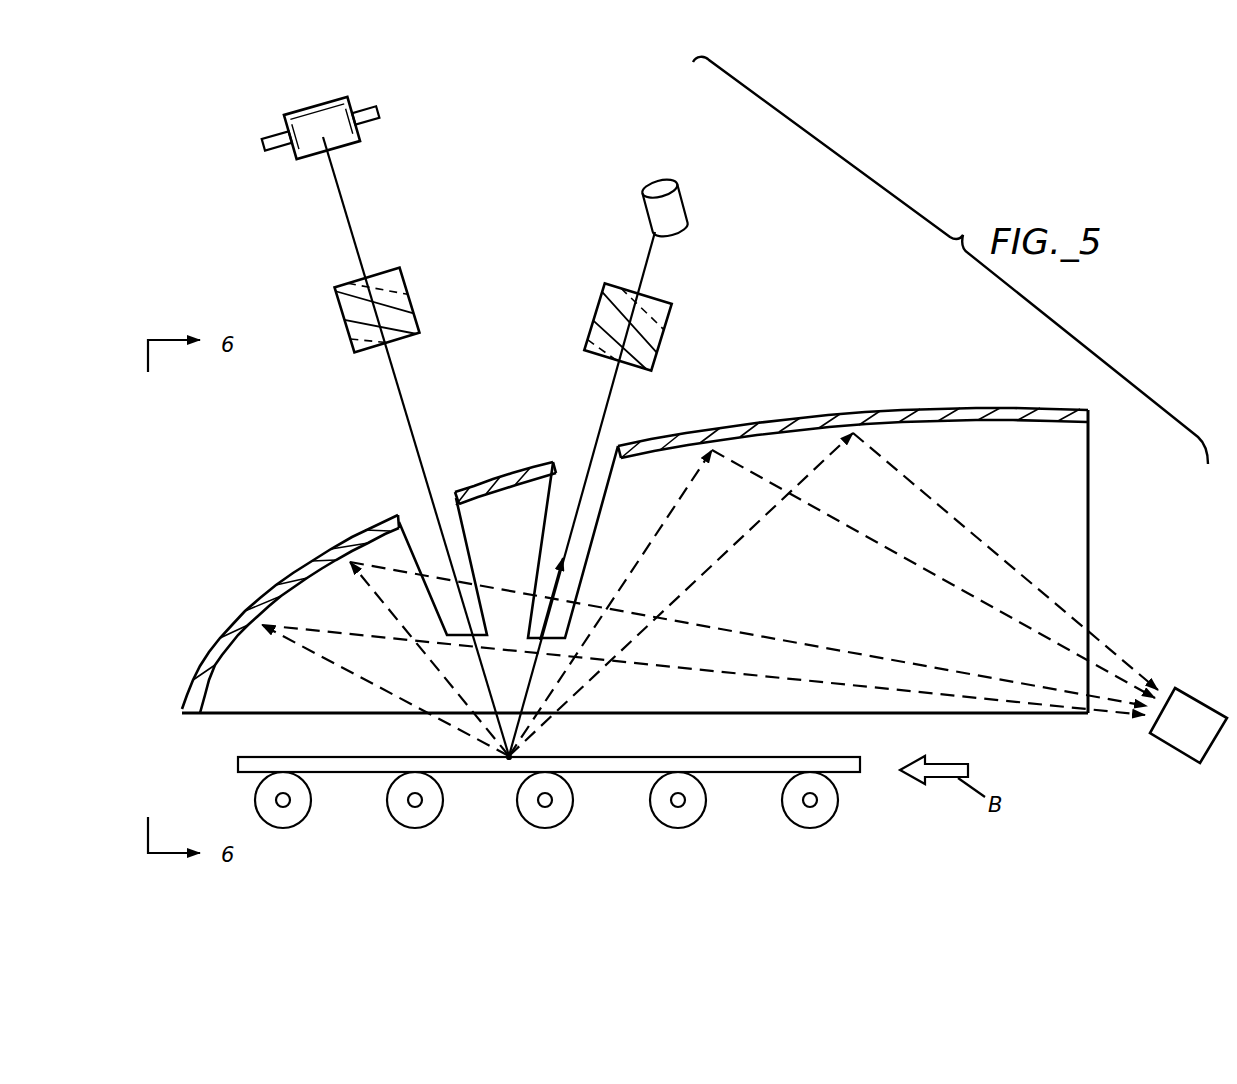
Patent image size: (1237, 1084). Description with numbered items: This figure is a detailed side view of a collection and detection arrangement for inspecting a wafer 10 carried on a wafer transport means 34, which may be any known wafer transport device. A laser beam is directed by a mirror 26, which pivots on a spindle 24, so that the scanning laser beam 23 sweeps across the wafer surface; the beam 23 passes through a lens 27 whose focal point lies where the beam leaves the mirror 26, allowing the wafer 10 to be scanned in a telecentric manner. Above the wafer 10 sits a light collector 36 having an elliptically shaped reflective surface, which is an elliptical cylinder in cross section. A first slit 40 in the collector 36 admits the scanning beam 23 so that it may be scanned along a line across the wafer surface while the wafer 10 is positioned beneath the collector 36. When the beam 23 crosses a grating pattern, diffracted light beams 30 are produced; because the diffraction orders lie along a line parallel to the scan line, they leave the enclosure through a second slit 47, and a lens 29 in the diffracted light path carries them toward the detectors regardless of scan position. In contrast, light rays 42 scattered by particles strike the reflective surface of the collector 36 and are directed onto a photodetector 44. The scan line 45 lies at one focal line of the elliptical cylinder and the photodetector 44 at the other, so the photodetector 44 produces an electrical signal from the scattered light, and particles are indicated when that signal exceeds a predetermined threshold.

The wafer 10 is at (245, 757).
The scanning laser beam 23 is at (416, 434).
The spindle 24 is at (348, 103).
The mirror 26 is at (326, 102).
The lens 27 is at (385, 270).
The lens 29 is at (657, 303).
The diffracted light beam 30 is at (577, 522).
The wafer transport means 34 is at (302, 806).
The light collector 36 is at (797, 420).
The first slit 40 is at (418, 518).
The scattered light rays 42 is at (932, 497).
The photodetector 44 is at (1190, 703).
The scan line 45 is at (507, 762).
The second slit 47 is at (578, 468).